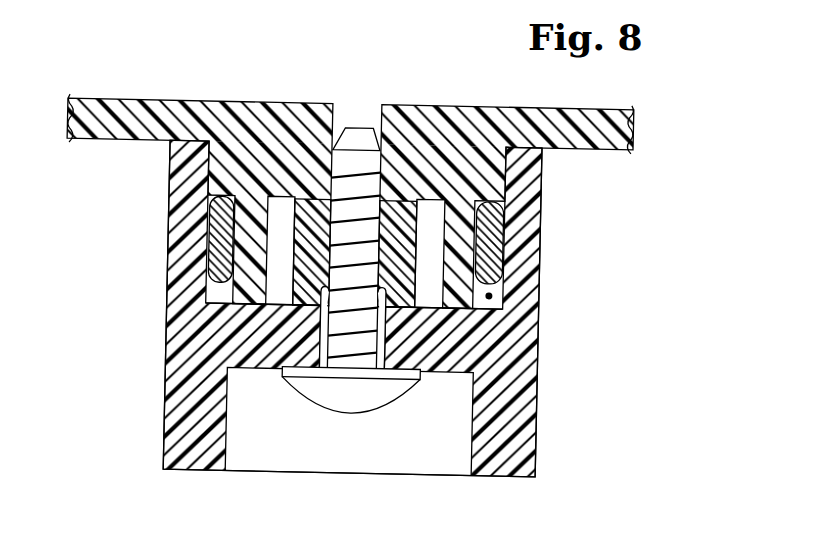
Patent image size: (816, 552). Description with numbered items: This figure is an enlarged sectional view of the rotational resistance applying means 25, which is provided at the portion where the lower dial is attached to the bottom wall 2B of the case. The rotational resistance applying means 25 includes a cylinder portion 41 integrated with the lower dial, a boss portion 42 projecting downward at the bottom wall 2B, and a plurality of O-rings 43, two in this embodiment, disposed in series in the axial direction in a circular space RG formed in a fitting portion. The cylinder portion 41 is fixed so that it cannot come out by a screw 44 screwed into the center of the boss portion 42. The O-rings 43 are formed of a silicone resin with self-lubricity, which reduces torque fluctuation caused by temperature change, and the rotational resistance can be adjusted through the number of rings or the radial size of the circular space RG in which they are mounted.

The bottom wall 2B is at (104, 108).
The rotational resistance applying means 25 is at (145, 194).
The cylinder portion 41 is at (533, 281).
The boss portion 42 is at (467, 233).
The O-rings 43 is at (205, 268).
The screw 44 is at (358, 400).
The circular space RG is at (490, 296).